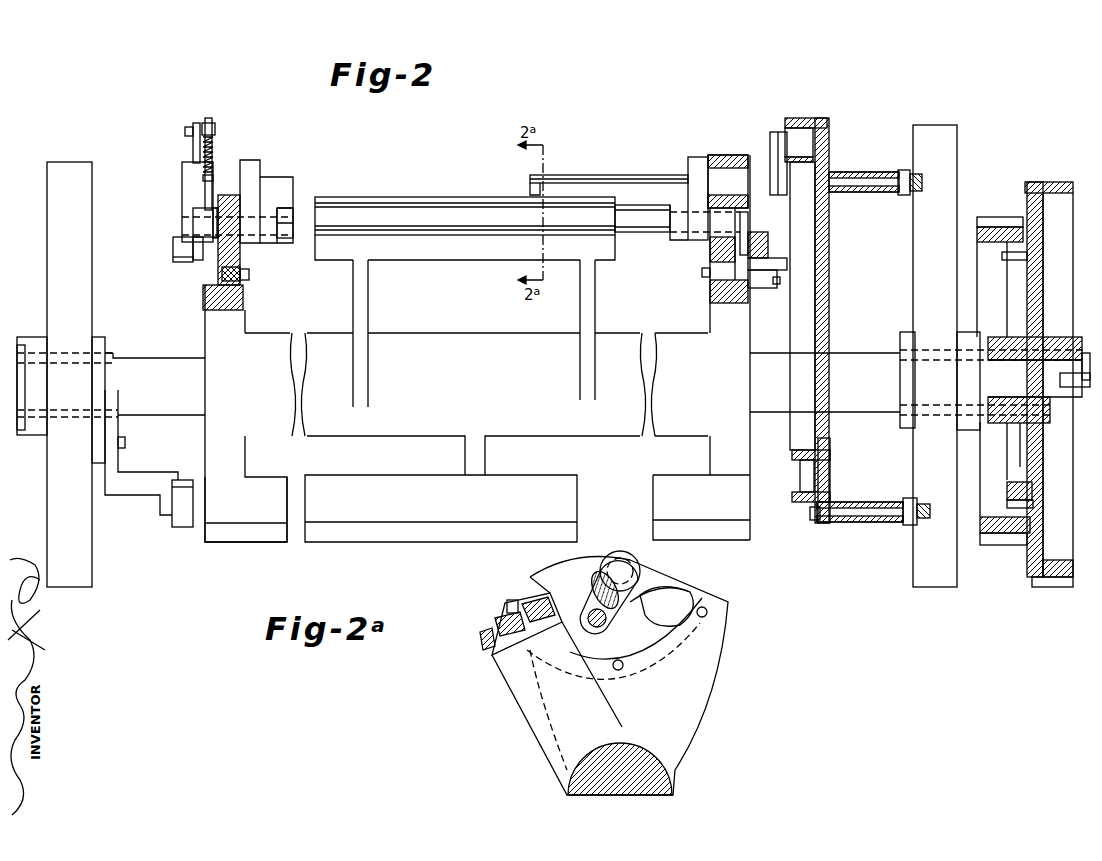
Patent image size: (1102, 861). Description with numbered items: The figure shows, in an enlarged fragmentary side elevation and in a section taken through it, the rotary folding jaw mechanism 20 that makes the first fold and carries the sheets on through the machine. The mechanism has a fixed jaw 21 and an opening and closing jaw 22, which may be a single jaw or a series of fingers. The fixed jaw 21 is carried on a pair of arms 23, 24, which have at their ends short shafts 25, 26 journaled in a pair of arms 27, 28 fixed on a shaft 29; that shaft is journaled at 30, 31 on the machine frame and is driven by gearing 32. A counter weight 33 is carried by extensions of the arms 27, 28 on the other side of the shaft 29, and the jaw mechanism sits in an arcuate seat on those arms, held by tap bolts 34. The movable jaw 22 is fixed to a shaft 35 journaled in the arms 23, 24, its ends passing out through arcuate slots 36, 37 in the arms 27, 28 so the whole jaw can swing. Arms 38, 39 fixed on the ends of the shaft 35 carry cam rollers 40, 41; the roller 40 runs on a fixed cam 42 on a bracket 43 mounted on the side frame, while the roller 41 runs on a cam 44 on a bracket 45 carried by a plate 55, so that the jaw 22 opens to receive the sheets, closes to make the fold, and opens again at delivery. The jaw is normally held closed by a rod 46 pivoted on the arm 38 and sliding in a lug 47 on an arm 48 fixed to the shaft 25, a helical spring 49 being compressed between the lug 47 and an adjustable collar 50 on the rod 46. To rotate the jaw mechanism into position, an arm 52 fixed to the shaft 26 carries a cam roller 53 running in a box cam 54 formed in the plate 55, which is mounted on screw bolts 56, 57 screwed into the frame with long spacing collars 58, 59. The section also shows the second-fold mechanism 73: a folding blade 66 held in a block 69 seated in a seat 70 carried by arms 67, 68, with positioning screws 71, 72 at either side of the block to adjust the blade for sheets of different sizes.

In FIG. 2A, the folding jaw mechanism 20 is at (595, 606).
In FIG. 2, the fixed jaw 21 is at (568, 176).
In FIG. 2A, the fixed jaw 21 is at (608, 580).
In FIG. 2A, the opening and closing jaw 22 is at (637, 600).
In FIG. 2, the arm 23 is at (258, 178).
In FIG. 2, the arm 24 is at (690, 182).
In FIG. 2, the short shaft 25 is at (182, 180).
In FIG. 2, the short shaft 26 is at (730, 160).
In FIG. 2, the arm 27 is at (205, 297).
In FIG. 2A, the arm 27 is at (680, 700).
In FIG. 2, the arm 28 is at (710, 298).
In FIG. 2, the shaft 29 is at (145, 368).
In FIG. 2A, the shaft 29 is at (662, 762).
In FIG. 2, the journal 30 is at (42, 340).
In FIG. 2, the journal 31 is at (945, 395).
In FIG. 2, the gearing 32 is at (300, 206).
In FIG. 2, the counter weight 33 is at (250, 522).
In FIG. 2, the tap bolts 34 is at (250, 275).
In FIG. 2A, the shaft 35 is at (600, 627).
In FIG. 2, the arcuate slot 36 is at (241, 248).
In FIG. 2A, the arcuate slot 36 is at (660, 605).
In FIG. 2, the arcuate slot 37 is at (710, 242).
In FIG. 2, the arm 38 is at (198, 260).
In FIG. 2, the arm 39 is at (748, 234).
In FIG. 2, the cam roller 40 is at (180, 240).
In FIG. 2, the cam roller 41 is at (766, 242).
In FIG. 2, the fixed cam 42 is at (175, 510).
In FIG. 2, the bracket 43 is at (128, 476).
In FIG. 2, the cam 44 is at (766, 266).
In FIG. 2, the bracket 45 is at (762, 284).
In FIG. 2, the rod 46 is at (210, 118).
In FIG. 2, the lug 47 is at (215, 129).
In FIG. 2, the arm 48 is at (192, 132).
In FIG. 2, the helical spring 49 is at (214, 144).
In FIG. 2, the collar 50 is at (213, 177).
In FIG. 2, the arm 52 is at (770, 142).
In FIG. 2, the cam roller 53 is at (798, 132).
In FIG. 2, the box cam 54 is at (829, 130).
In FIG. 2, the plate 55 is at (822, 298).
In FIG. 2, the screw bolt 56 is at (862, 176).
In FIG. 2, the screw bolt 57 is at (846, 516).
In FIG. 2, the spacing collar 58 is at (900, 172).
In FIG. 2, the spacing collar 59 is at (878, 502).
In FIG. 2A, the folding blade 66 is at (510, 602).
In FIG. 2, the arm 67 is at (366, 293).
In FIG. 2A, the arm 67 is at (520, 702).
In FIG. 2, the arm 68 is at (590, 306).
In FIG. 2A, the block 69 is at (498, 622).
In FIG. 2, the seat 70 is at (452, 256).
In FIG. 2A, the seat 70 is at (500, 640).
In FIG. 2A, the positioning screw 71 is at (482, 631).
In FIG. 2A, the positioning screw 72 is at (530, 605).
In FIG. 2A, the second fold mechanism 73 is at (705, 662).